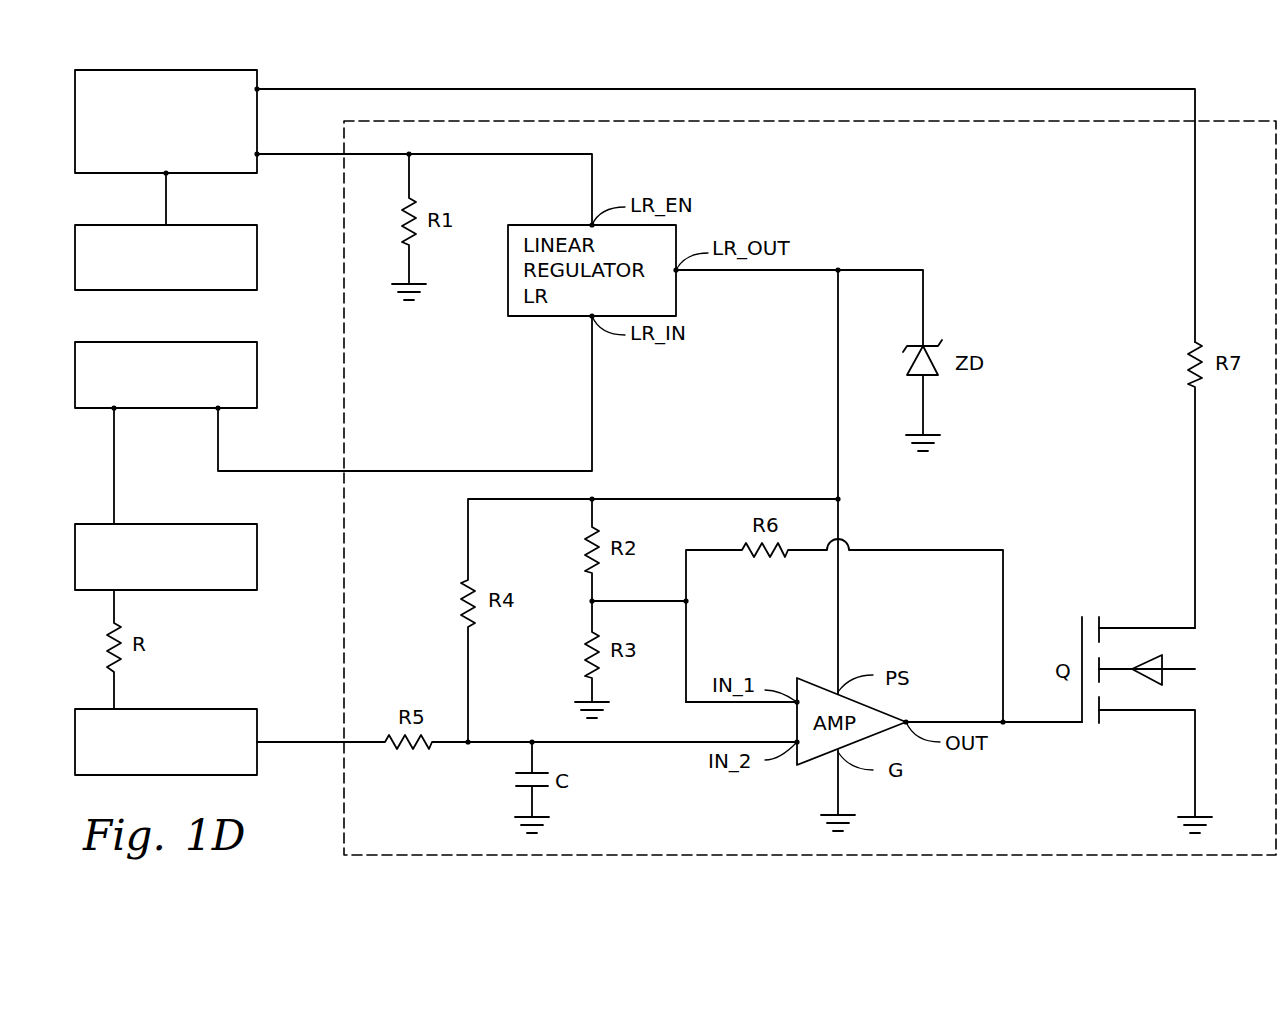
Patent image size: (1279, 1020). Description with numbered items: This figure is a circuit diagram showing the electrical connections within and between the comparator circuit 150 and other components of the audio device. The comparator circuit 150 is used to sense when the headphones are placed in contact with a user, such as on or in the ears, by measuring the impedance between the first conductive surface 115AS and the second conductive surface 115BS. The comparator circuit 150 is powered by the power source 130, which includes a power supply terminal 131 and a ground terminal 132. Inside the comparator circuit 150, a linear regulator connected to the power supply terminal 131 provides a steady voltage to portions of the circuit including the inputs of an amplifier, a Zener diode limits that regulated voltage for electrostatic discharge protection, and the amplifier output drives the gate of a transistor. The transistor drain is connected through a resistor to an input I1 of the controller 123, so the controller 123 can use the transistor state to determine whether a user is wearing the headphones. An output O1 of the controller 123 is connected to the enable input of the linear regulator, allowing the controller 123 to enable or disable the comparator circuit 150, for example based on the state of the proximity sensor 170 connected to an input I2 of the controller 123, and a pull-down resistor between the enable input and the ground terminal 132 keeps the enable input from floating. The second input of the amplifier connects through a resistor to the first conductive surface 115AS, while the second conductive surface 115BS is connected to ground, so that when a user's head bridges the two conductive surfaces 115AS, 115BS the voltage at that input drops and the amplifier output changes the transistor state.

The controller 123 is at (146, 70).
The proximity sensor 170 is at (146, 225).
The power source 130 is at (146, 342).
The power supply terminal 131 is at (220, 409).
The ground terminal 132 is at (116, 409).
The second conductive surface 115BS is at (158, 524).
The first conductive surface 115AS is at (158, 709).
The comparator circuit 150 is at (1247, 120).
The input I1 is at (257, 89).
The output O1 is at (257, 154).
The input I2 is at (166, 173).